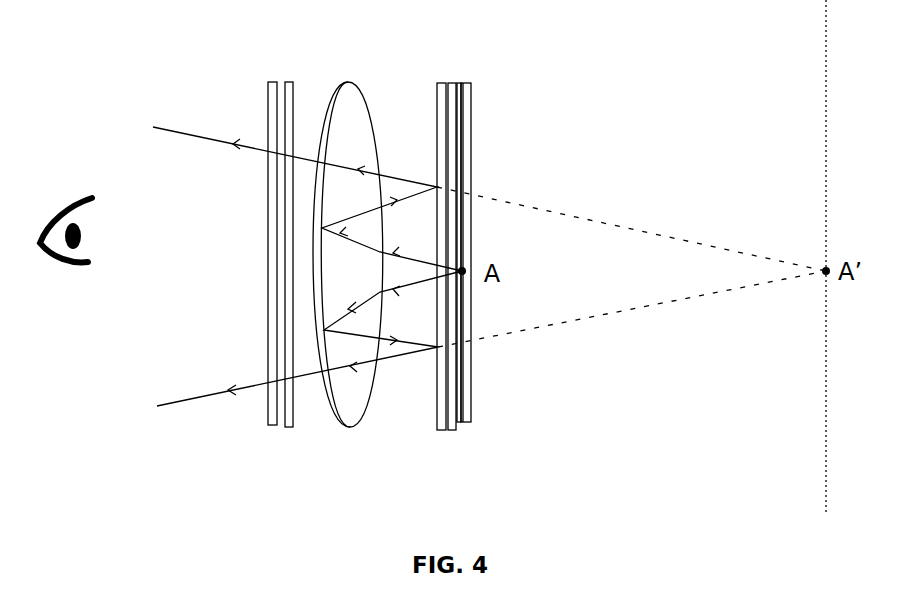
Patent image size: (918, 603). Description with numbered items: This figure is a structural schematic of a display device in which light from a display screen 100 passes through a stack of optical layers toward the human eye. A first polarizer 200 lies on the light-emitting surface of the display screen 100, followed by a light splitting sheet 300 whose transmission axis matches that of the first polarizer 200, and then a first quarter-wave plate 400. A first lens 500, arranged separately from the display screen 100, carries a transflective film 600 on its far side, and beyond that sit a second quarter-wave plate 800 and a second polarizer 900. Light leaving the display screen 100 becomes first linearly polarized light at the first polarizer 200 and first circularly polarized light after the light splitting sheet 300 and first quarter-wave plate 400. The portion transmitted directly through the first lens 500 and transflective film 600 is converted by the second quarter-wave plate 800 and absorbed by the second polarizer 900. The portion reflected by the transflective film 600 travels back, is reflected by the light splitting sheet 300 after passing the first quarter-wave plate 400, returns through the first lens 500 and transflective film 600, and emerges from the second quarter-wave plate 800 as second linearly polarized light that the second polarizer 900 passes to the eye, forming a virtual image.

The display screen 100 is at (468, 133).
The first polarizer 200 is at (458, 88).
The light splitting sheet 300 is at (450, 430).
The first quarter-wave plate 400 is at (437, 112).
The first lens 500 is at (350, 427).
The transflective film 600 is at (332, 98).
The second quarter-wave plate 800 is at (288, 427).
The second polarizer 900 is at (268, 102).